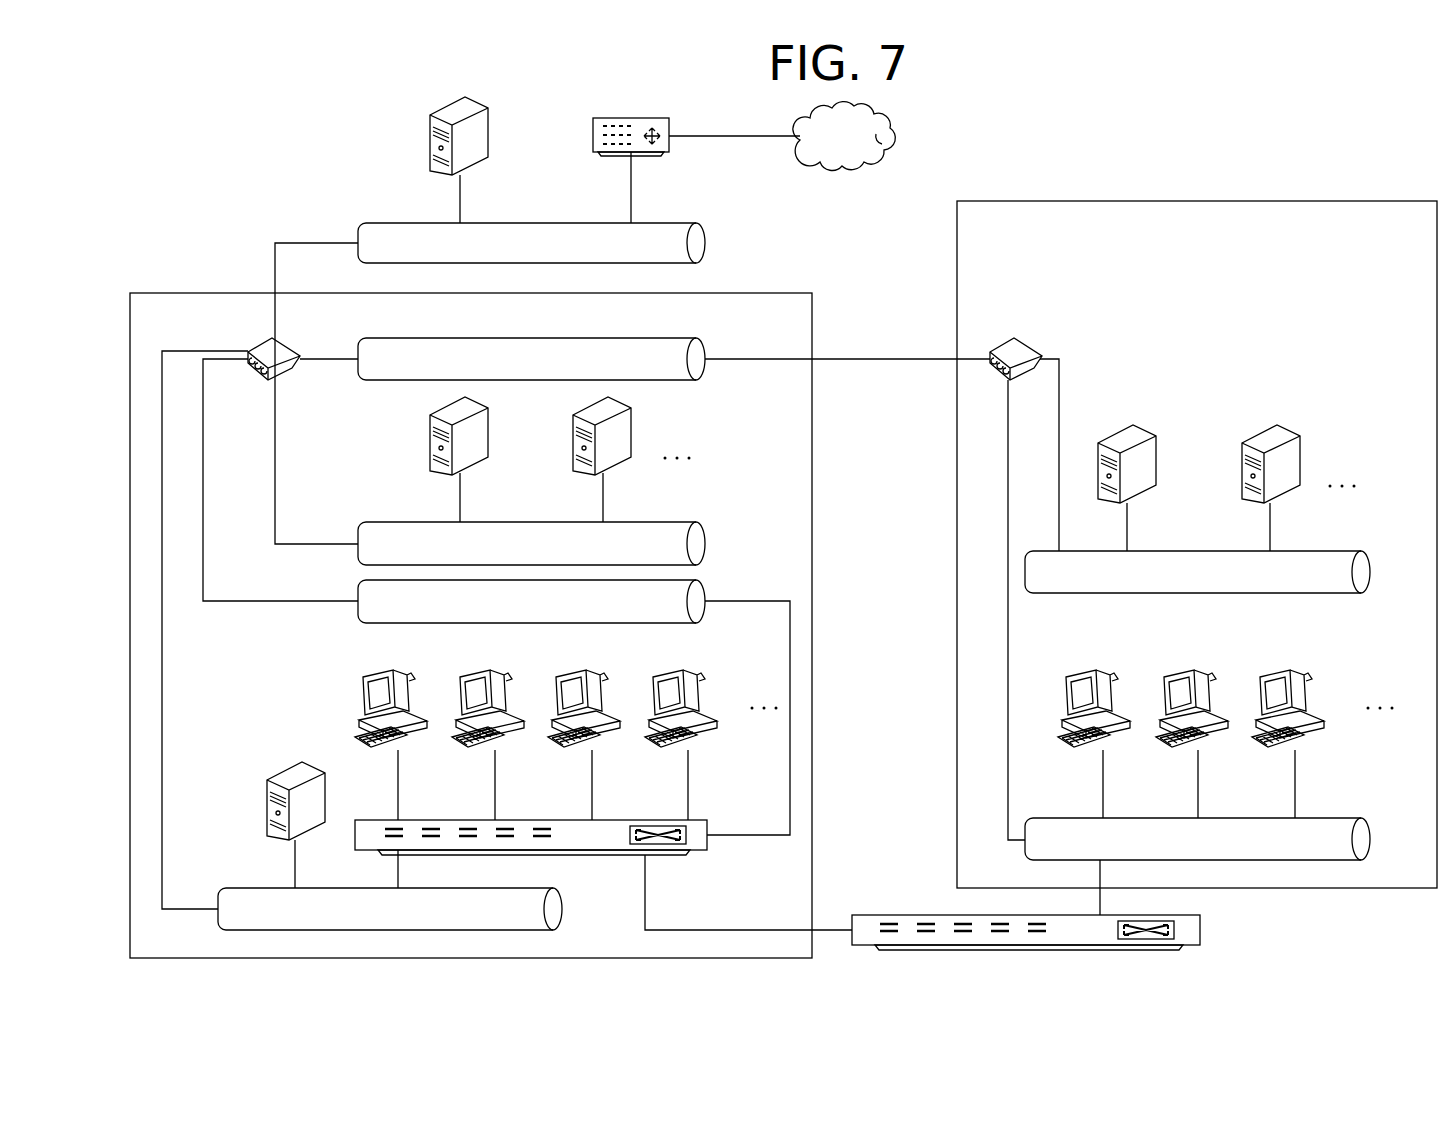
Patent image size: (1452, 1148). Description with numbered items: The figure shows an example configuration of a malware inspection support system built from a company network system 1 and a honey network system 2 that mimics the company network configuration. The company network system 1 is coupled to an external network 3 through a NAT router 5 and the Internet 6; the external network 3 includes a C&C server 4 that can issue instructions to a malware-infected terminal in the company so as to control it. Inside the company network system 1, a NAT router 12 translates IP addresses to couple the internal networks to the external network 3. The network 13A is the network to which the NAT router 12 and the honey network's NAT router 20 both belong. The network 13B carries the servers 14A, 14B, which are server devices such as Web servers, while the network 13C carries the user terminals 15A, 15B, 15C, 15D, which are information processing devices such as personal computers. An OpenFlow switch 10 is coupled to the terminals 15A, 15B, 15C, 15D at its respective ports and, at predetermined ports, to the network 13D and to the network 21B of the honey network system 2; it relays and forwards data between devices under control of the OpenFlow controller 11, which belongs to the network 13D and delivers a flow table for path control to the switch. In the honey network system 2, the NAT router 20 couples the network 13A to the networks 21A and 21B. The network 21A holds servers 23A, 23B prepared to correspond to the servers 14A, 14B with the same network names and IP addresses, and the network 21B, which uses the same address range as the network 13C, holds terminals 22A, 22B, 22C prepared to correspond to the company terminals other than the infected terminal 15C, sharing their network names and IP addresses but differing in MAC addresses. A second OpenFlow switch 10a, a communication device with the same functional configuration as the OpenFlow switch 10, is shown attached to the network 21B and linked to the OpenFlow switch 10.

The company network system 1 is at (812, 307).
The honey network system 2 is at (1195, 201).
The external network 3 is at (682, 205).
The C&C server 4 is at (488, 117).
The NAT router 5 is at (631, 118).
The Internet 6 is at (895, 134).
The OpenFlow switch 10 is at (609, 855).
The OpenFlow switch 10a is at (1200, 930).
The OpenFlow controller 11 is at (267, 790).
The NAT router 12 is at (286, 343).
The network 13A is at (670, 338).
The network 13B is at (670, 522).
The network 13C is at (402, 623).
The network 13D is at (240, 888).
The server 14A is at (430, 425).
The server 14B is at (630, 425).
The terminal 15A is at (385, 685).
The terminal 15B is at (483, 666).
The terminal 15C is at (579, 666).
The terminal 15D is at (674, 666).
The NAT router 20 is at (1031, 343).
The network 21A is at (1336, 551).
The network 21B is at (1336, 818).
The terminal 22A is at (1098, 667).
The terminal 22B is at (1195, 667).
The terminal 22C is at (1292, 667).
The server 23A is at (1155, 450).
The server 23B is at (1298, 450).